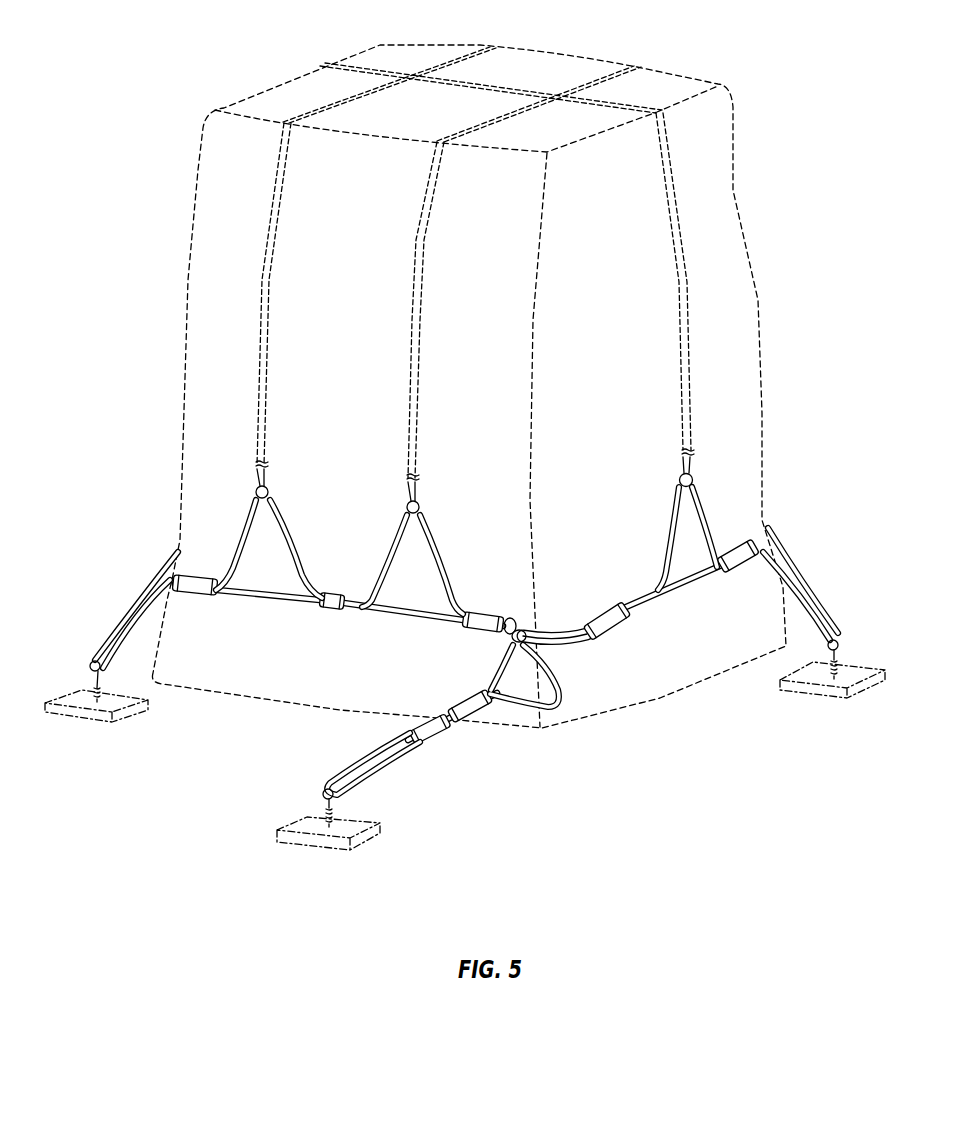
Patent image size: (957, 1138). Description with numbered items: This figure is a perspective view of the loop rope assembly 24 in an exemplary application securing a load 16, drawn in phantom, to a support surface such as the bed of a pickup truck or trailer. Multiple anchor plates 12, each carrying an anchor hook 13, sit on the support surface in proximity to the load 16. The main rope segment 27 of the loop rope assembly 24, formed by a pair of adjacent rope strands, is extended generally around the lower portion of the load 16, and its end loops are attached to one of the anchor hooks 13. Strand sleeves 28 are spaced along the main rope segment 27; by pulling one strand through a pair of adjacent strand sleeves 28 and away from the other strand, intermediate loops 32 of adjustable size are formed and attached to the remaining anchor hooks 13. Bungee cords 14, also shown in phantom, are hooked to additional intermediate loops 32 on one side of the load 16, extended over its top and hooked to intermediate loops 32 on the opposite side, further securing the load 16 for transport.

The anchor plate 12 is at (128, 714).
The anchor hook 13 is at (88, 665).
The bungee cord 14 is at (417, 241).
The load 16 is at (198, 172).
The loop rope assembly 24 is at (466, 610).
The main rope segment 27 is at (268, 606).
The strand sleeve 28 is at (193, 574).
The intermediate loop 32 is at (394, 535).